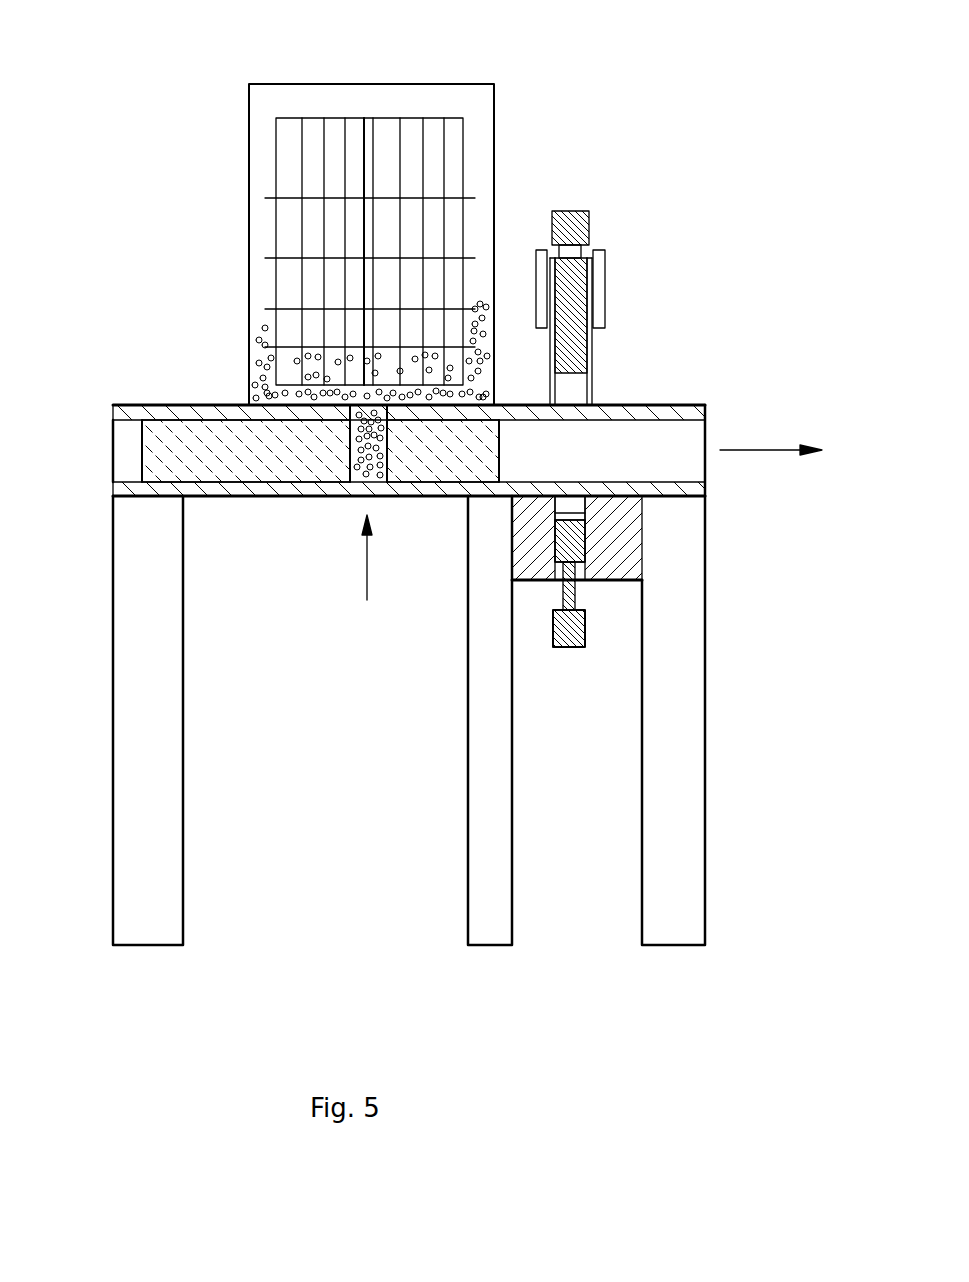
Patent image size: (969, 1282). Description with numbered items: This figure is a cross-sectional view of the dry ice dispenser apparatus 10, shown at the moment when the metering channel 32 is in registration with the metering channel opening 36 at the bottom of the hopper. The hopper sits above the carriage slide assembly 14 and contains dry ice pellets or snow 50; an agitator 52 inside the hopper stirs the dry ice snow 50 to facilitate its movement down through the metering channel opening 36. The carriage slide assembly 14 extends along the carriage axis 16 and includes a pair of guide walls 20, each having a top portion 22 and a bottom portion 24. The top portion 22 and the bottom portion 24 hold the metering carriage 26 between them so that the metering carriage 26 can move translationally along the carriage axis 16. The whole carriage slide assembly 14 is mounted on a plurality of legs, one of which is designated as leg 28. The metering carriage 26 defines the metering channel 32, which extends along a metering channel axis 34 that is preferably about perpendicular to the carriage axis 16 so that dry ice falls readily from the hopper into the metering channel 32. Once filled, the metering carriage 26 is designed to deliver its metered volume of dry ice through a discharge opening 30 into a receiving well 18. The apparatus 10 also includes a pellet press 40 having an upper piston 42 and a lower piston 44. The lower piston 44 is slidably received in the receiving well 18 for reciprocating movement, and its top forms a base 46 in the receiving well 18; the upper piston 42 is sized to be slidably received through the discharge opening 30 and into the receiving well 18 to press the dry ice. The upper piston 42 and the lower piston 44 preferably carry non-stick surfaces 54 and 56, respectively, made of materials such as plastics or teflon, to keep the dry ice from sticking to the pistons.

The dry ice dispenser apparatus 10 is at (573, 127).
The carriage slide assembly 14 is at (201, 403).
The carriage axis 16 is at (771, 434).
The receiving well 18 is at (617, 567).
The guide walls 20 is at (685, 443).
The top portion 22 is at (647, 407).
The bottom portion 24 is at (260, 497).
The metering carriage 26 is at (190, 452).
The leg 28 is at (697, 698).
The discharge opening 30 is at (578, 487).
The metering channel 32 is at (355, 457).
The metering channel axis 34 is at (352, 557).
The metering channel opening 36 is at (380, 408).
The pellet press 40 is at (640, 233).
The upper piston 42 is at (575, 211).
The lower piston 44 is at (558, 648).
The base 46 is at (552, 500).
The dry ice pellets or snow 50 is at (256, 402).
The agitator 52 is at (412, 118).
The non-stick surface 54 is at (574, 384).
The non-stick surface 56 is at (593, 500).